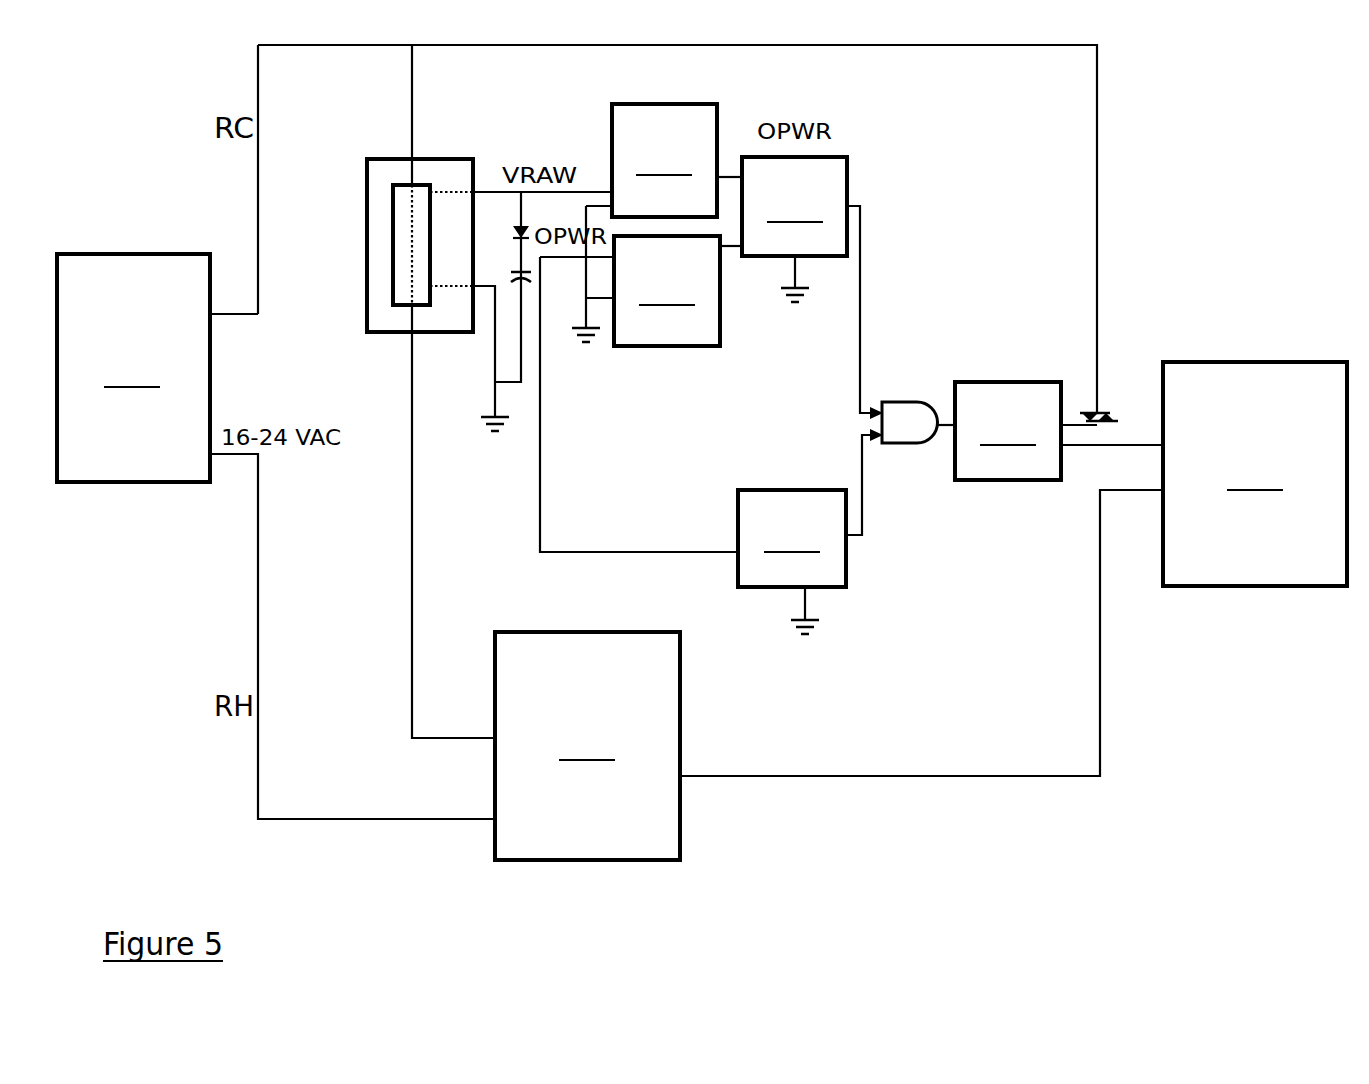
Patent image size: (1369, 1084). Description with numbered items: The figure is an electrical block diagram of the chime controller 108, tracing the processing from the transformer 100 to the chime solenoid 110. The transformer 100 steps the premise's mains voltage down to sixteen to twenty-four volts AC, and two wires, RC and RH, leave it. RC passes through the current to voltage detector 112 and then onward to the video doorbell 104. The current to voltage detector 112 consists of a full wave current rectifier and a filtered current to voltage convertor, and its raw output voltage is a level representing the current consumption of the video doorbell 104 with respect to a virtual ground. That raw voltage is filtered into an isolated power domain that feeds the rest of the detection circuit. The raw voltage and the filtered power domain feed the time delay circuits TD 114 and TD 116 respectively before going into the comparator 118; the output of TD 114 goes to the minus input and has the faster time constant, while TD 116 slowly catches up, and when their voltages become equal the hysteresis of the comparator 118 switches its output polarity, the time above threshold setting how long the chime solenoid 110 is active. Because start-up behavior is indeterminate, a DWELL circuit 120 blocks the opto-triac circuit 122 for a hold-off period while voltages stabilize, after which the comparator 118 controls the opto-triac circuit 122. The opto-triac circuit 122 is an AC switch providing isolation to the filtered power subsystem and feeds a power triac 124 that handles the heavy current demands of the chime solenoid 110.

The transformer 100 is at (133, 368).
The video doorbell 104 is at (587, 746).
The chime controller 108 is at (1128, 157).
The chime solenoid 110 is at (1255, 474).
The current to voltage detector 112 is at (367, 205).
The time delay circuit TD 114 is at (677, 160).
The time delay circuit TD 116 is at (678, 291).
The comparator 118 is at (812, 288).
The DWELL circuit 120 is at (810, 531).
The opto-triac circuit 122 is at (1059, 431).
The power triac 124 is at (1105, 413).